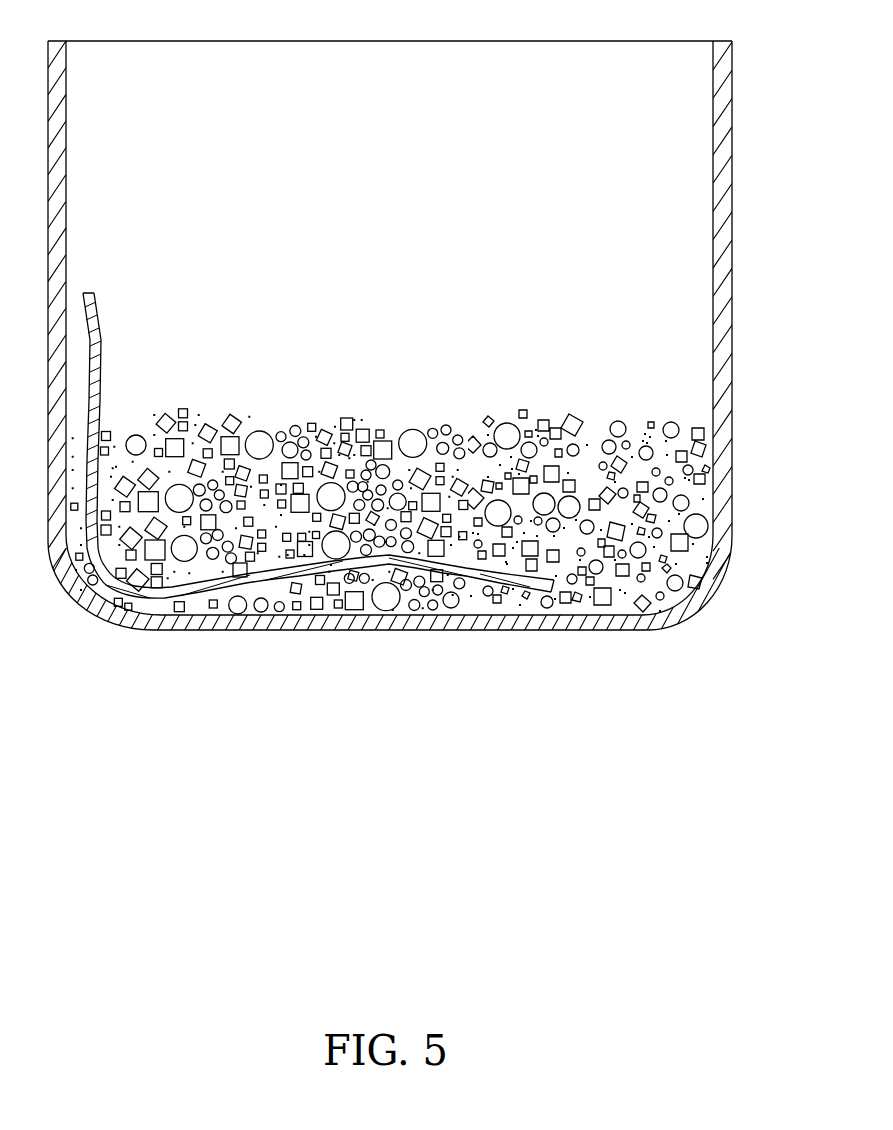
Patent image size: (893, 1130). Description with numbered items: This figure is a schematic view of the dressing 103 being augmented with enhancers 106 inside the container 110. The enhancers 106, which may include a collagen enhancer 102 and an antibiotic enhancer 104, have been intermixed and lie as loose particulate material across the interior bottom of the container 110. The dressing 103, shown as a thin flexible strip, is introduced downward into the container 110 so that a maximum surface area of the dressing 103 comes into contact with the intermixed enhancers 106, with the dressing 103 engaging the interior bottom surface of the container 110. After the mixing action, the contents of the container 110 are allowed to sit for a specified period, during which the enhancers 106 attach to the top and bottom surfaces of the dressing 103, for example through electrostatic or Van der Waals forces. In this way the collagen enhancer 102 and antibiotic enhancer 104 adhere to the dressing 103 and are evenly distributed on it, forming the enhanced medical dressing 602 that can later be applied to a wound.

The container 110 is at (735, 177).
The dressing 103 is at (110, 334).
The enhanced medical dressing 602 is at (112, 424).
The enhancers 106 is at (533, 411).
The antibiotic enhancer 104 is at (588, 416).
The collagen enhancer 102 is at (647, 416).